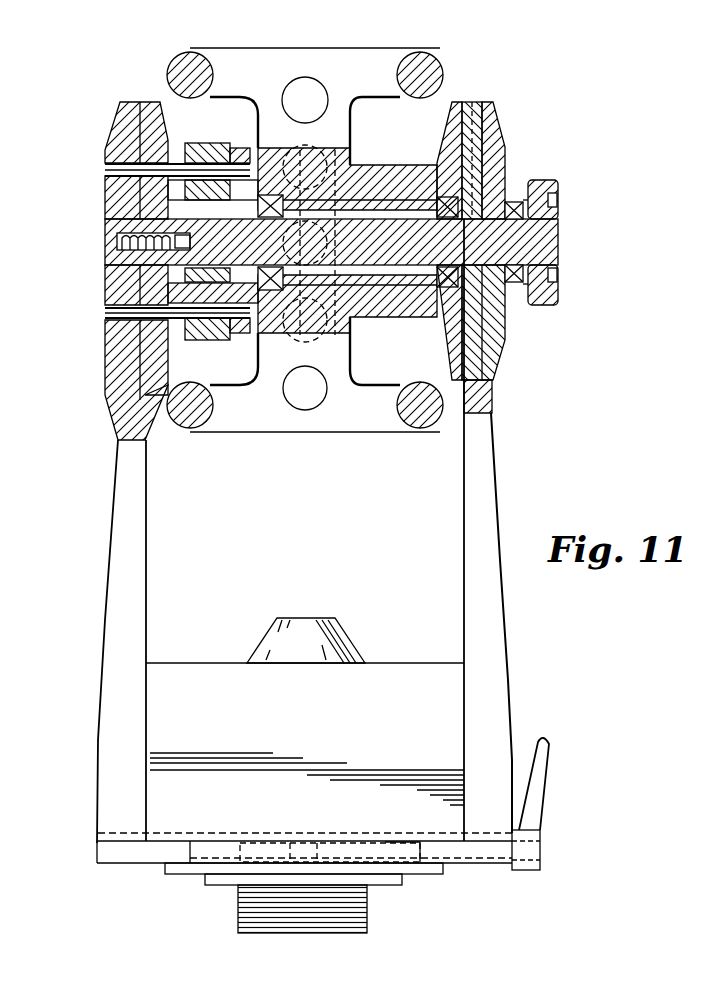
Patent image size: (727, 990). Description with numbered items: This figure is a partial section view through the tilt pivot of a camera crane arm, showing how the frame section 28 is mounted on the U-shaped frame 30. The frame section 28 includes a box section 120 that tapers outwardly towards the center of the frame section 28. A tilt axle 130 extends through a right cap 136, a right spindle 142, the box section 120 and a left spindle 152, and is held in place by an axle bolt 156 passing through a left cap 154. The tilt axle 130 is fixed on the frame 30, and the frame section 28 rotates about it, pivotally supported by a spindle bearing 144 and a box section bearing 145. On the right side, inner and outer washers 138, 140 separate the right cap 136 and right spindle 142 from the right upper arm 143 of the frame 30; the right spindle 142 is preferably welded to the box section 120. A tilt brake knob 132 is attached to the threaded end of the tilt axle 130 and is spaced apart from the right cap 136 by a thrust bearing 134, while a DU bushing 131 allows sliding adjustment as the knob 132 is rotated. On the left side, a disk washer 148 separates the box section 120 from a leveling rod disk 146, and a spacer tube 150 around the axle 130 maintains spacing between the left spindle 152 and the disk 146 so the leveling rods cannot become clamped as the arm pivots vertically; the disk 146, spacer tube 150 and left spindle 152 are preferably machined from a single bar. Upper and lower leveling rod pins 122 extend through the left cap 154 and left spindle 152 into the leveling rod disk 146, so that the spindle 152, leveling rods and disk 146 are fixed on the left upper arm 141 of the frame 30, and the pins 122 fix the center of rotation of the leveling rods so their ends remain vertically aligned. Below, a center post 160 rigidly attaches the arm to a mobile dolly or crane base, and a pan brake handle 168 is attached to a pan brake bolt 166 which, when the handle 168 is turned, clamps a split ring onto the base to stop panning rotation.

The frame section 28 is at (188, 44).
The U-shaped frame 30 is at (482, 447).
The box section 120 is at (322, 148).
The leveling rod pins 122 is at (112, 170).
The tilt axle 130 is at (557, 243).
The DU bushing 131 is at (478, 203).
The tilt brake knob 132 is at (562, 182).
The thrust bearing 134 is at (520, 288).
The right cap 136 is at (503, 147).
The inner washer 138 is at (488, 342).
The outer washer 140 is at (460, 345).
The left upper arm 141 is at (138, 98).
The right spindle 142 is at (445, 128).
The right upper arm 143 is at (484, 103).
The spindle bearing 144 is at (442, 320).
The box section bearing 145 is at (270, 188).
The leveling rod disk 146 is at (248, 158).
The disk washer 148 is at (258, 340).
The spacer tube 150 is at (112, 280).
The left spindle 152 is at (157, 412).
The left cap 154 is at (115, 207).
The axle bolt 156 is at (112, 243).
The center post 160 is at (238, 910).
The pan brake bolt 166 is at (458, 862).
The pan brake handle 168 is at (548, 758).